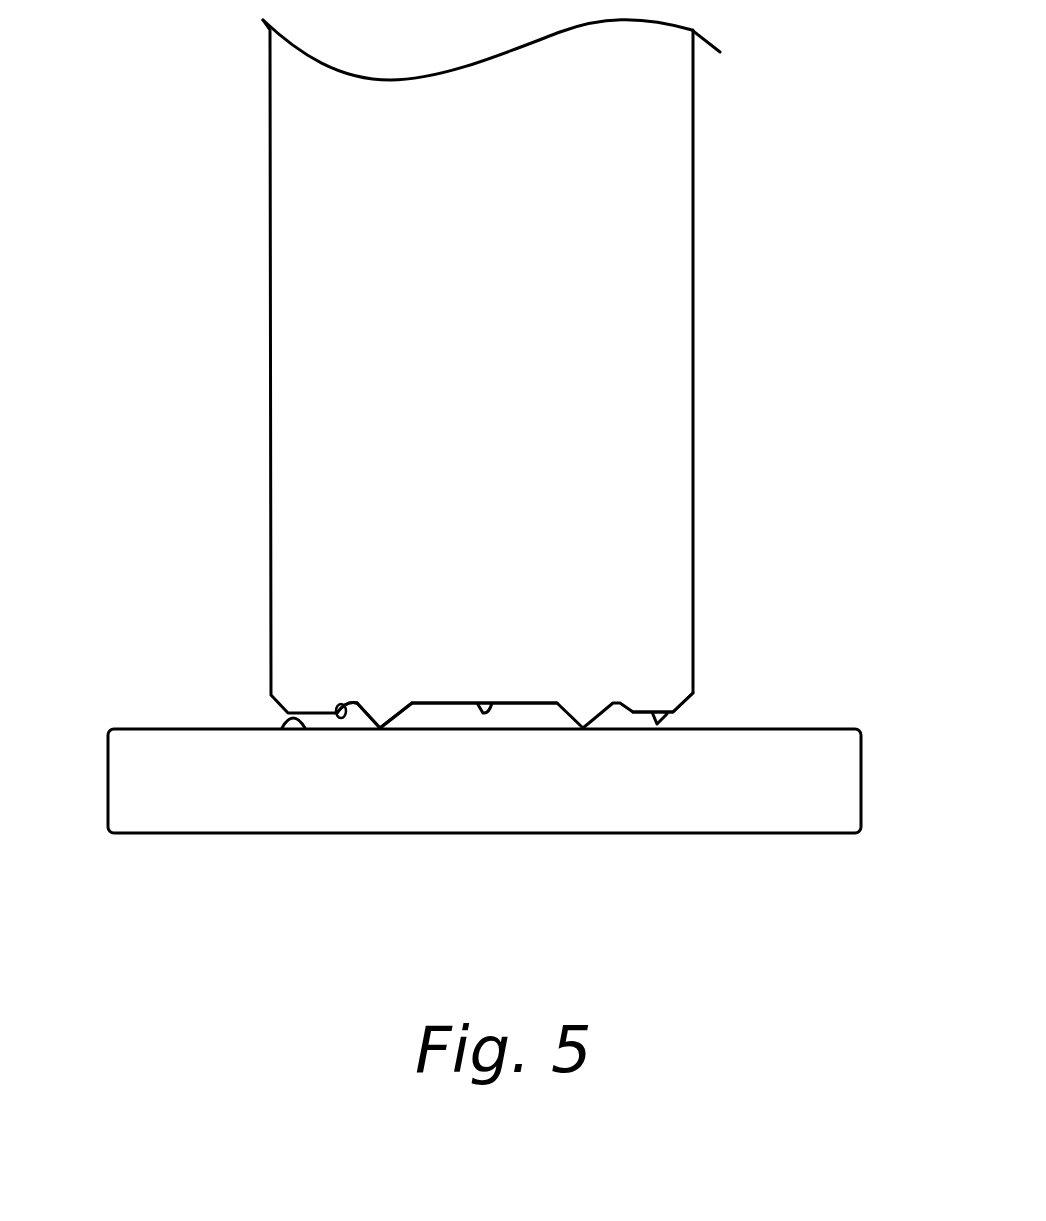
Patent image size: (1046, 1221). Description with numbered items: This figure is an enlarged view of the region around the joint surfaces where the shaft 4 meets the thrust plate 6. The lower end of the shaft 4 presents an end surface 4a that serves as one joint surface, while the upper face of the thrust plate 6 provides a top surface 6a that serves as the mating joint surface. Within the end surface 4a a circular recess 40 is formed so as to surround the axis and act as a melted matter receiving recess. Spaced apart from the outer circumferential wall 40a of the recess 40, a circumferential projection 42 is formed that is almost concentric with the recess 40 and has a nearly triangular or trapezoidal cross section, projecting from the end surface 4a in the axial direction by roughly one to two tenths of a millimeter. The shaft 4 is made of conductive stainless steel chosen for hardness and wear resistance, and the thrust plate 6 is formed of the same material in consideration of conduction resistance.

The shaft 4 is at (633, 210).
The end surface of the shaft 4a is at (673, 710).
The circular recess 40 is at (500, 700).
The outer circumferential wall of the recess 40a is at (334, 712).
The circumferential projection 42 is at (385, 710).
The thrust plate 6 is at (613, 783).
The top surface of the thrust plate 6a is at (279, 728).